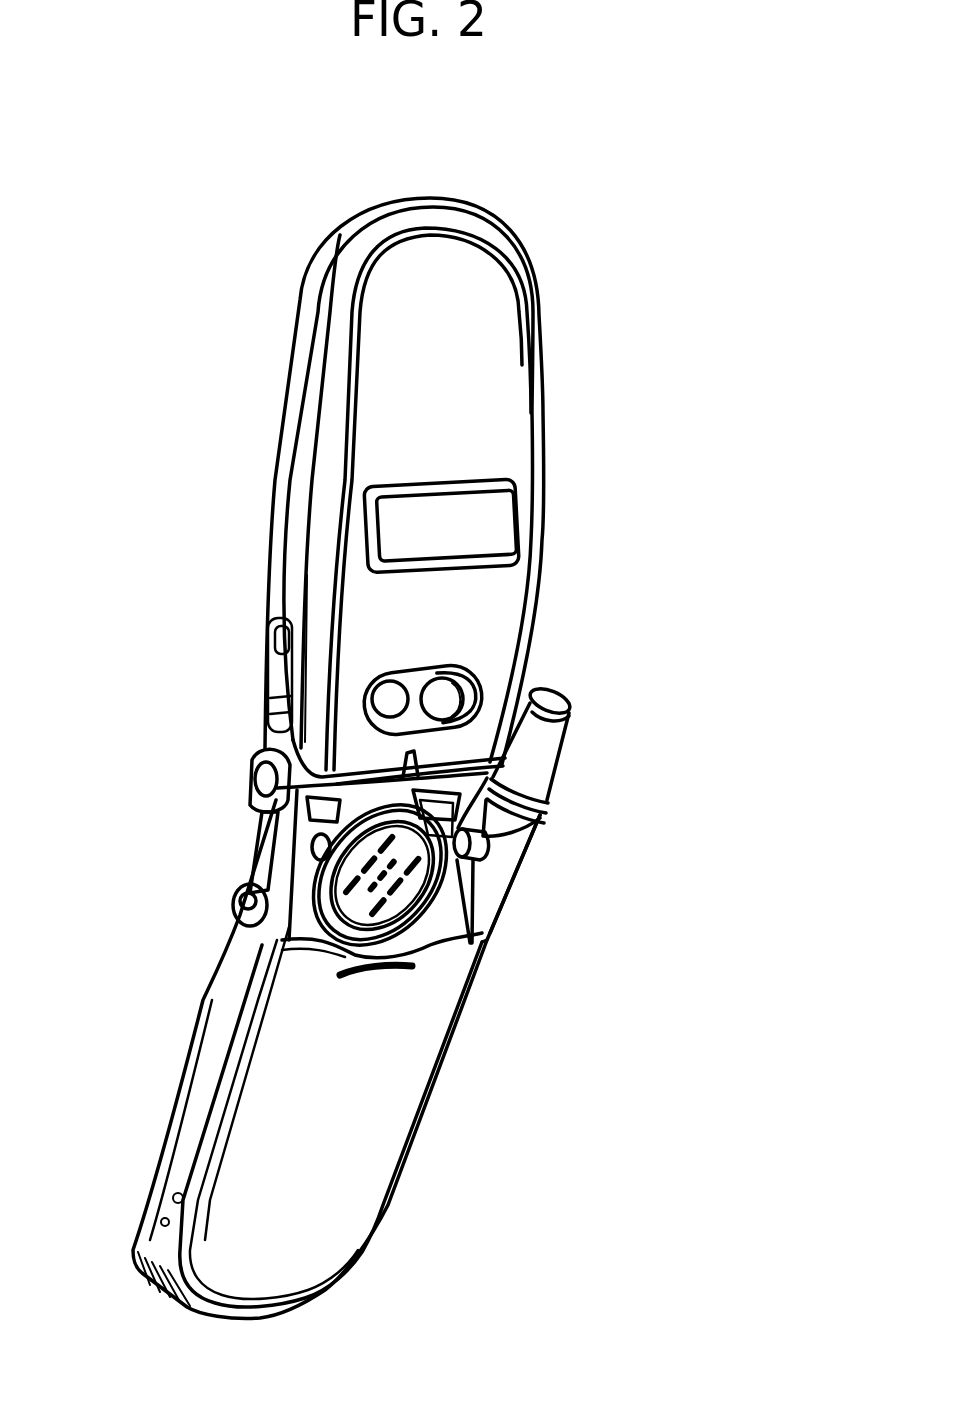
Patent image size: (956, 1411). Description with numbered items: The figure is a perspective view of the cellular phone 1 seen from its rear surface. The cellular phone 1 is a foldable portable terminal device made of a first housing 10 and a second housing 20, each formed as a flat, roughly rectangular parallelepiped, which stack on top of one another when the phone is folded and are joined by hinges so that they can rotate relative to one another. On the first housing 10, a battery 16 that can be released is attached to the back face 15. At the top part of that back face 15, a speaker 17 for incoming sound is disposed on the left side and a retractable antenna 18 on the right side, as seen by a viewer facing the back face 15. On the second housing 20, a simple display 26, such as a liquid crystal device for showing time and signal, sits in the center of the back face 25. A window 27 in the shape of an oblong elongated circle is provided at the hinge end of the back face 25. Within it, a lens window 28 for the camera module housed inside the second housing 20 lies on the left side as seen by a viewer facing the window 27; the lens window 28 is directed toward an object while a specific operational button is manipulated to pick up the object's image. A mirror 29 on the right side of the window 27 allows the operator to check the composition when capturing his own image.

The cellular phone 1 is at (207, 358).
The first housing 10 is at (211, 975).
The back face 15 is at (370, 1198).
The battery 16 is at (435, 1028).
The speaker 17 is at (342, 888).
The retractable antenna 18 is at (548, 740).
The second housing 20 is at (301, 293).
The back face 25 is at (508, 318).
The simple display 26 is at (480, 522).
The window 27 is at (460, 668).
The lens window 28 is at (385, 697).
The mirror 29 is at (447, 695).